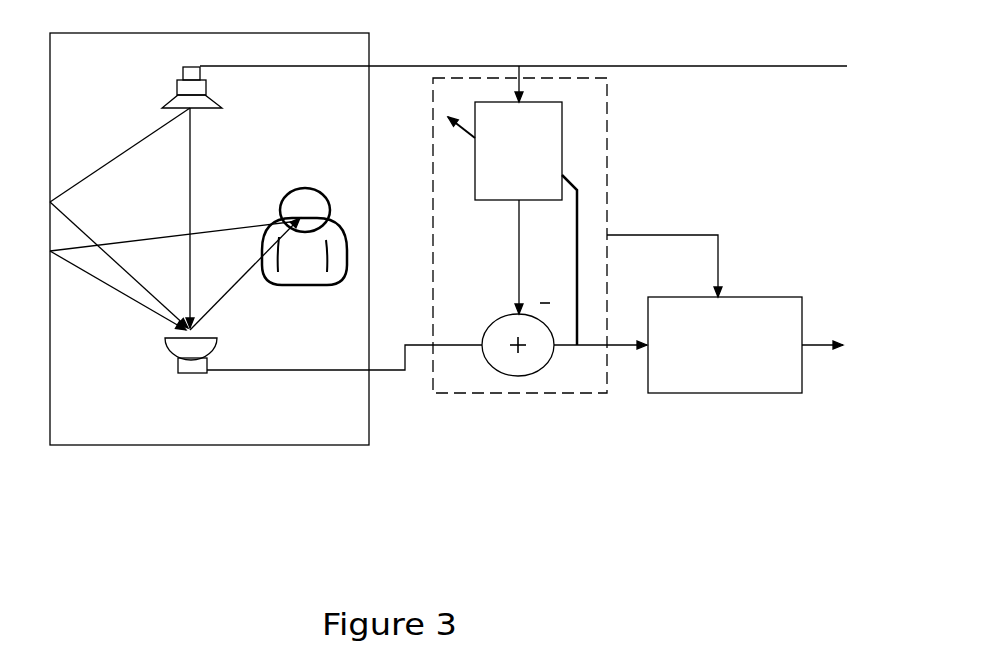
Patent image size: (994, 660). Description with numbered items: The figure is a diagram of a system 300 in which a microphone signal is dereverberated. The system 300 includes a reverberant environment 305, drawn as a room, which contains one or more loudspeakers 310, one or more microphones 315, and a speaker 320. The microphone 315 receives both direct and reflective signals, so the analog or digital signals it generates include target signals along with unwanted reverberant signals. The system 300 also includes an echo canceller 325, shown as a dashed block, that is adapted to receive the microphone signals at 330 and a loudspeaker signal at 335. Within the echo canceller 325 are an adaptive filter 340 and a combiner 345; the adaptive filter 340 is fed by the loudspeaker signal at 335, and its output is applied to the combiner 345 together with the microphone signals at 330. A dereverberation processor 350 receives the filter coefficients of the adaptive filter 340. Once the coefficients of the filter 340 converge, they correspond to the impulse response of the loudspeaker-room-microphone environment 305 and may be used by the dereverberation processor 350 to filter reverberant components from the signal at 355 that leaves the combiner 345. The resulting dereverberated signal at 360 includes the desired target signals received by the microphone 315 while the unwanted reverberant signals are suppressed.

The system 300 is at (333, 508).
The reverberant environment 305 is at (132, 445).
The loudspeaker 310 is at (192, 90).
The microphone 315 is at (178, 360).
The speaker 320 is at (307, 202).
The echo canceller 325 is at (607, 120).
The microphone signals 330 is at (392, 372).
The loudspeaker signal 335 is at (647, 66).
The adaptive filter 340 is at (490, 102).
The combiner 345 is at (540, 372).
The dereverberation processor 350 is at (725, 345).
The signal 355 is at (588, 347).
The dereverberated signal 360 is at (820, 347).